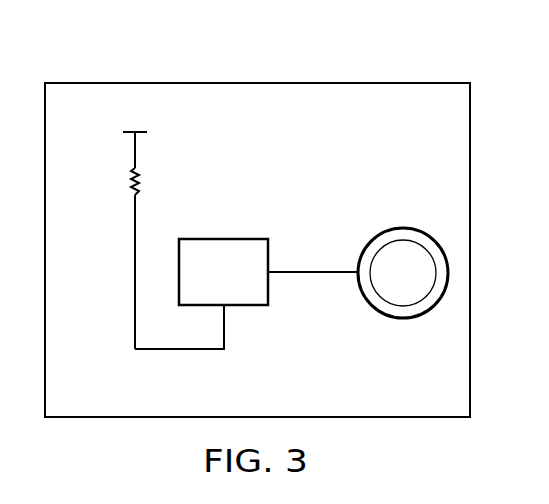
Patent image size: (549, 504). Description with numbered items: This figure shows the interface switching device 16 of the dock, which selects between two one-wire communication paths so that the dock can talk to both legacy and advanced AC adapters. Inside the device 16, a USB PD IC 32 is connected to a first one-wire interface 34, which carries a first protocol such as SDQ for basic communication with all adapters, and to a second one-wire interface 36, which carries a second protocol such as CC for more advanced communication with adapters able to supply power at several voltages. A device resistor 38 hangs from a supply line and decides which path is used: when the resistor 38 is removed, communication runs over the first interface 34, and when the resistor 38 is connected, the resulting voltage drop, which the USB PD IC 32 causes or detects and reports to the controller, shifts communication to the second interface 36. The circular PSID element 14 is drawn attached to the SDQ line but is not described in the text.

The interface switching device 16 is at (325, 83).
The device resistor 38 is at (128, 183).
The USB PD IC 32 is at (212, 238).
The first 1-wire interface 34 is at (312, 270).
The PSID pressure sensor identification device 14 is at (403, 228).
The second 1-wire interface 36 is at (180, 351).